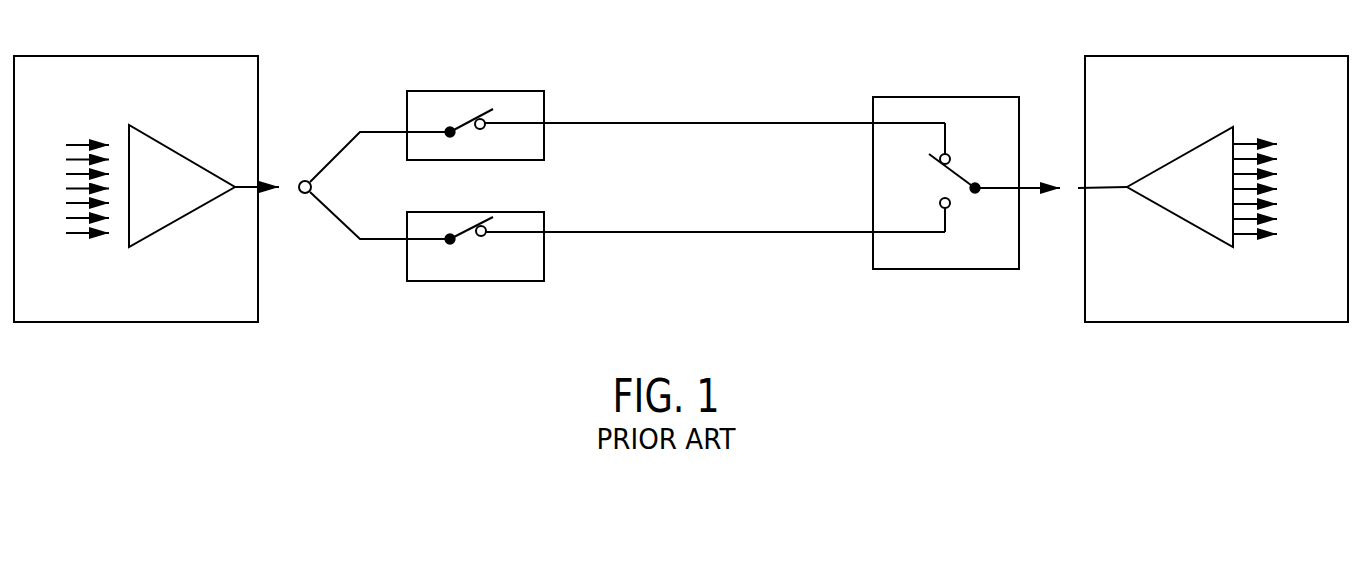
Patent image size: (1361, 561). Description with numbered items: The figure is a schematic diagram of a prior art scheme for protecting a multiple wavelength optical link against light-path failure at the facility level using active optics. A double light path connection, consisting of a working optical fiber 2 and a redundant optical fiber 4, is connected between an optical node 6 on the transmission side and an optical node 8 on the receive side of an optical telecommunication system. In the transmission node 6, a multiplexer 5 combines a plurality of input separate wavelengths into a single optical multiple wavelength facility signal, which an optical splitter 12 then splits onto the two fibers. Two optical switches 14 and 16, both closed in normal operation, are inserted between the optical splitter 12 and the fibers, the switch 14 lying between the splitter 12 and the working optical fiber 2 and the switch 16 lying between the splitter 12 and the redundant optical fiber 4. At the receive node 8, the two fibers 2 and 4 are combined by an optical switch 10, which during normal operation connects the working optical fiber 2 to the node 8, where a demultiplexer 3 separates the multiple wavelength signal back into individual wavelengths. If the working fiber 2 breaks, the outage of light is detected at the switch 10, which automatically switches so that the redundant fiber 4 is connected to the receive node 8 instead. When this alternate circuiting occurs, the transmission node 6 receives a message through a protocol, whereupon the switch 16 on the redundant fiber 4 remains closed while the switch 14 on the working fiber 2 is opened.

The working optical fiber 2 is at (717, 123).
The demultiplexer 3 is at (1182, 152).
The redundant optical fiber 4 is at (698, 233).
The multiplexer 5 is at (175, 162).
The optical node of the transmission side 6 is at (185, 56).
The optical node of the receive side 8 is at (1177, 55).
The optical switch 10 is at (932, 97).
The optical splitter 12 is at (311, 180).
The optical switch 14 is at (472, 90).
The optical switch 16 is at (453, 282).